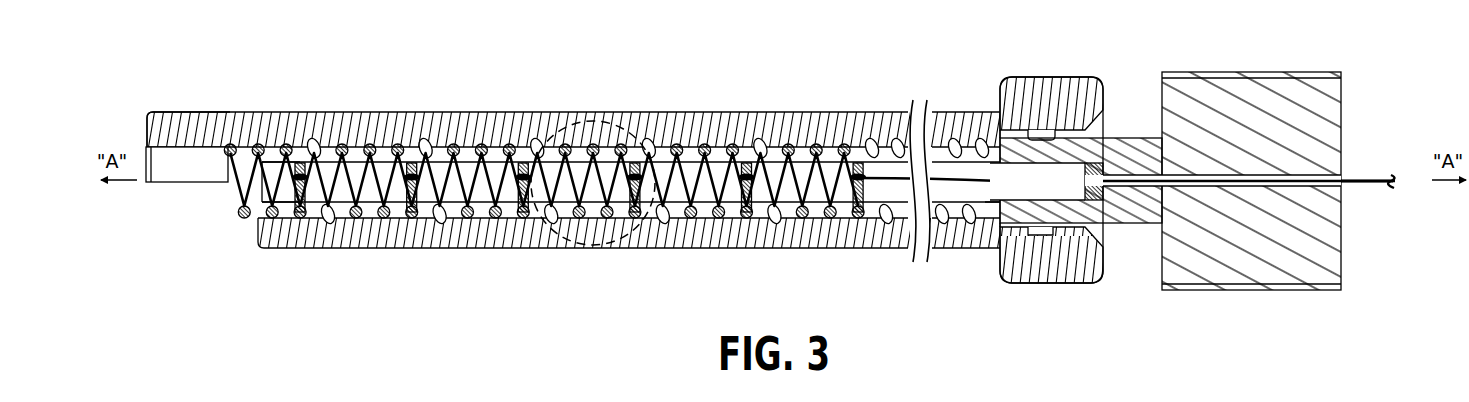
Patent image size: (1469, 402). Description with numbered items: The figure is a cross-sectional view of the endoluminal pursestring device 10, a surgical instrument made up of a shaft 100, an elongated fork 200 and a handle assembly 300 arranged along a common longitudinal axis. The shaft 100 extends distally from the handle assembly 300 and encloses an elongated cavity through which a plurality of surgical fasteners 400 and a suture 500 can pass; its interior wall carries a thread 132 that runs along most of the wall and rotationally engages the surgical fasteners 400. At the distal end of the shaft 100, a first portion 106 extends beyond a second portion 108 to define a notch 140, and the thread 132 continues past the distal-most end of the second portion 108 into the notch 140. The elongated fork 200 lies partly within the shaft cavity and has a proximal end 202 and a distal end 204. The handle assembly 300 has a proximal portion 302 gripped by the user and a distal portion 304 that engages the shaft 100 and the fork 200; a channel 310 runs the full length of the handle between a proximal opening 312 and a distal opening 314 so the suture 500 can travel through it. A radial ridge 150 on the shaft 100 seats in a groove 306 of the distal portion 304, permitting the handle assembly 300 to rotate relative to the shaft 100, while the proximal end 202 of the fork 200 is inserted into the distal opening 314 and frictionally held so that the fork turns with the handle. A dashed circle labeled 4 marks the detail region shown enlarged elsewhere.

The endoluminal pursestring device 10 is at (796, 58).
The shaft 100 is at (473, 112).
The first portion of shaft 106 is at (155, 120).
The second portion of shaft 108 is at (290, 237).
The thread 132 is at (232, 165).
The notch 140 is at (159, 203).
The elongated fork 200 is at (695, 185).
The distal end of elongated fork 204 is at (275, 190).
The surgical fasteners 400 is at (868, 153).
The radial ridge 150 is at (1043, 227).
The groove 306 is at (1052, 137).
The distal portion of handle assembly 304 is at (1135, 131).
The distal opening 314 is at (997, 203).
The proximal end of elongated fork 202 is at (1101, 200).
The handle assembly 300 is at (1228, 92).
The proximal portion of handle assembly 302 is at (1330, 76).
The channel 310 is at (1325, 187).
The proximal opening 312 is at (1345, 187).
The suture 500 is at (1367, 176).
The detail region of FIG. 4 is at (612, 120).